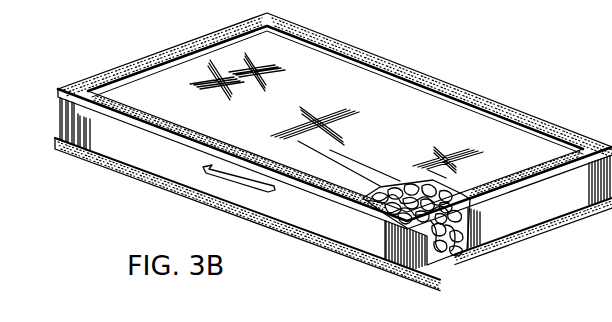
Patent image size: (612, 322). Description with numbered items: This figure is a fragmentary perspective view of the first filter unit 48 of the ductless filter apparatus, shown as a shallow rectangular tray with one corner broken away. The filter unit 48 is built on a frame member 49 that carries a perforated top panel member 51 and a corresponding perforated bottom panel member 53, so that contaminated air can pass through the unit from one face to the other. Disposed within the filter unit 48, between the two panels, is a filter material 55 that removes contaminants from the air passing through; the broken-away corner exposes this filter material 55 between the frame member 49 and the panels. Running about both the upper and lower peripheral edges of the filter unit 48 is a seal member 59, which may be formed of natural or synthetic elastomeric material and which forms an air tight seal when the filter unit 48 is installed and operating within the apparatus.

The first filter unit 48 is at (520, 84).
The frame member 49 is at (514, 219).
The perforated top panel member 51 is at (183, 72).
The perforated bottom panel member 53 is at (445, 260).
The filter material 55 is at (385, 222).
The seal member 59 is at (96, 77).